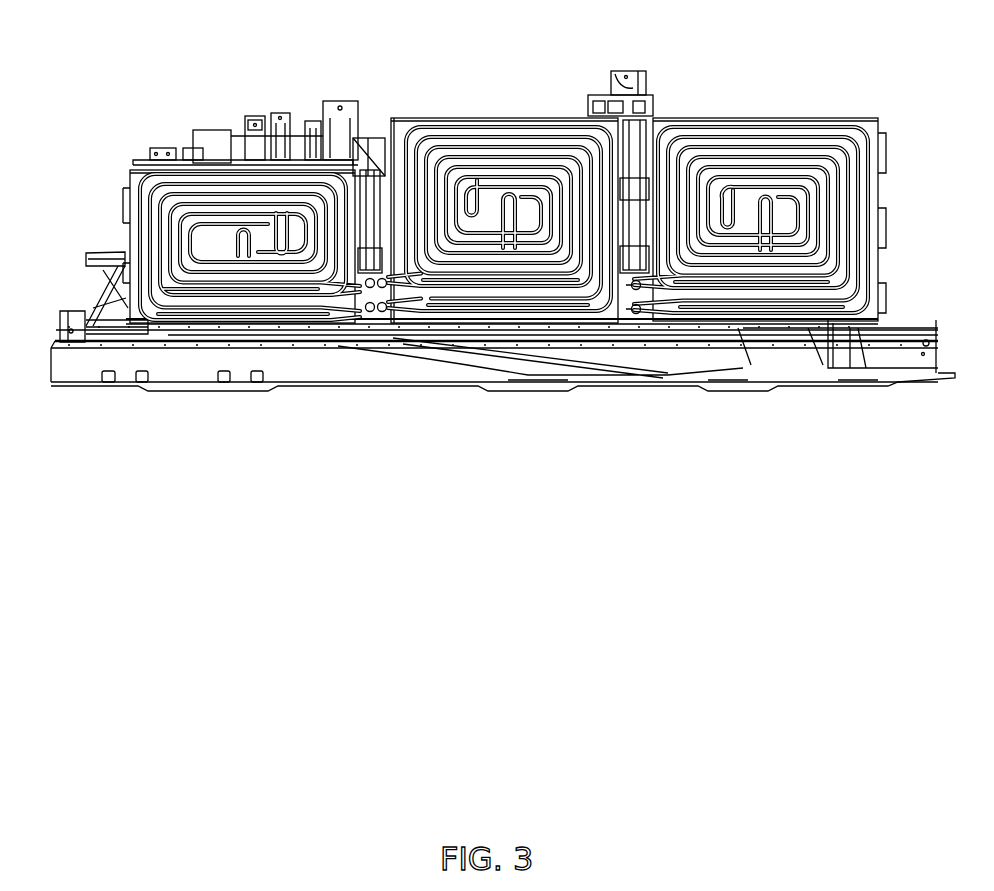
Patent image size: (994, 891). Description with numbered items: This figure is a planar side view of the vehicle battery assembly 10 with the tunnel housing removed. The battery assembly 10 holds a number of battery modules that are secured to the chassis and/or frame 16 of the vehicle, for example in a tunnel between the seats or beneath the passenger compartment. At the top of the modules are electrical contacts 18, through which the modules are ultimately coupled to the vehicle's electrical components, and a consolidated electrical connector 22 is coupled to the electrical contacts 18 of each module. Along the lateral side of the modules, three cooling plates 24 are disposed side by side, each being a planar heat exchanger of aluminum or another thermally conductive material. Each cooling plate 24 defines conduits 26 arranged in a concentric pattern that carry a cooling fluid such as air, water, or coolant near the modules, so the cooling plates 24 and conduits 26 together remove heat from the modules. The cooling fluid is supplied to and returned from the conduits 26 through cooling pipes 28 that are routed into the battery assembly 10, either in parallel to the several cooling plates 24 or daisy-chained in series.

The battery assembly 10 is at (503, 60).
The chassis and/or frame 16 is at (378, 380).
The electrical contacts 18 is at (170, 125).
The consolidated electrical connector 22 is at (612, 64).
The cooling plates 24 is at (247, 297).
The conduits 26 is at (97, 263).
The cooling pipes 28 is at (318, 328).